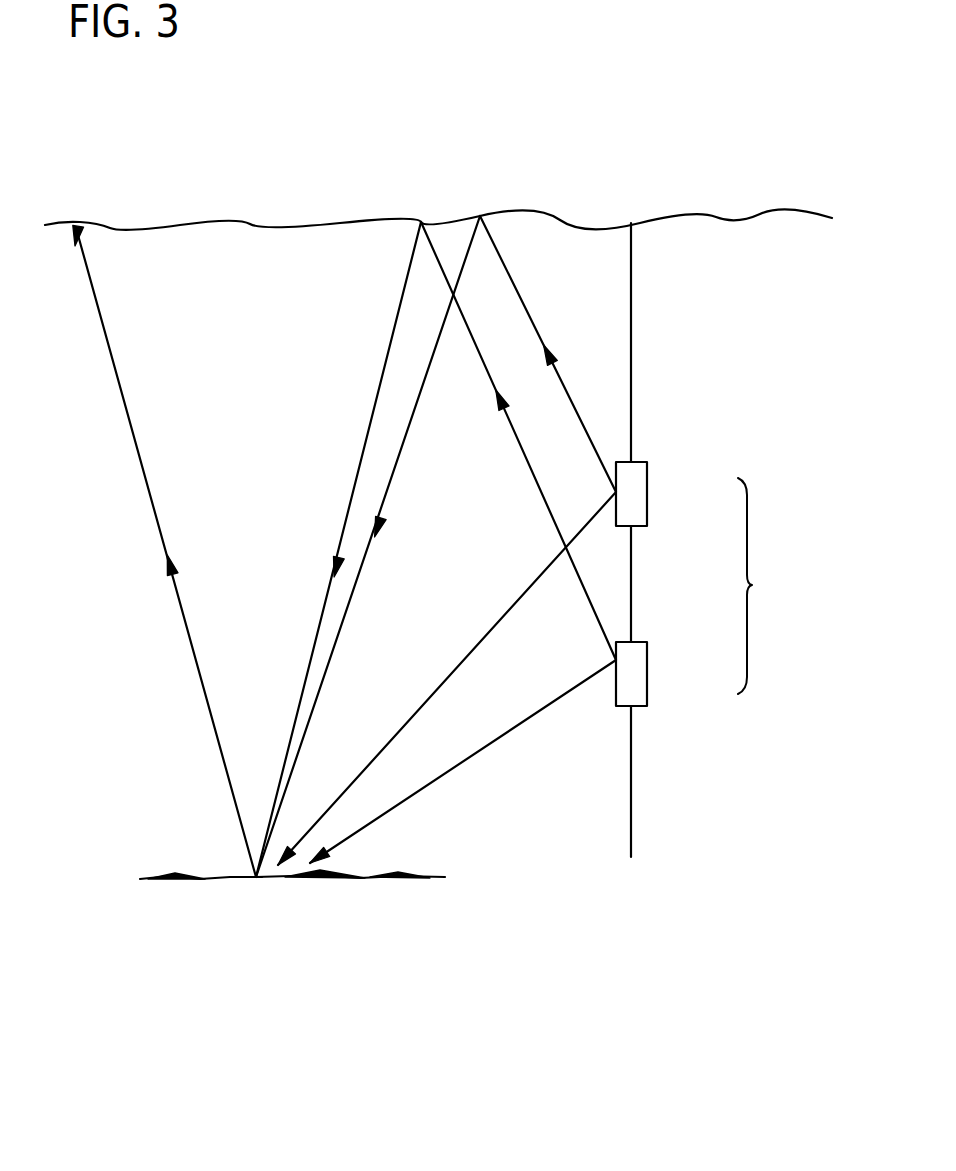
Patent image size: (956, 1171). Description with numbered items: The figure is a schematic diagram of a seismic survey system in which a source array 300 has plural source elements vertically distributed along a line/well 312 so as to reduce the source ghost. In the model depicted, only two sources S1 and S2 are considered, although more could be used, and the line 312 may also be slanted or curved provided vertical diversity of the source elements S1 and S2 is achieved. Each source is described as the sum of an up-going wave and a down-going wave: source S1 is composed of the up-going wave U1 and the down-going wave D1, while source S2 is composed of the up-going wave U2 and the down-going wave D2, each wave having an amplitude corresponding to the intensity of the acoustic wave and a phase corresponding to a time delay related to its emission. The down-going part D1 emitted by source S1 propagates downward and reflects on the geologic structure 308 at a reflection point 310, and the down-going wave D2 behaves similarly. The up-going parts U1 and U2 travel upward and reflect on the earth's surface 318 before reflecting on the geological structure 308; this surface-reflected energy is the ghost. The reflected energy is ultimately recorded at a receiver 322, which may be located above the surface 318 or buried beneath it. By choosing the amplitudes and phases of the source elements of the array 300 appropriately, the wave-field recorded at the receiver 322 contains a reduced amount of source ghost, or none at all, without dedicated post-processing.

The source array 300 is at (797, 598).
The geologic structure 308 is at (388, 877).
The reflection point 310 is at (243, 908).
The line/well 312 is at (632, 580).
The surface 318 is at (716, 217).
The receiver 322 is at (79, 228).
The first source S1 is at (647, 492).
The second source S2 is at (647, 662).
The up-going wave of source S1 U1 is at (522, 292).
The up-going wave of source S2 U2 is at (512, 435).
The down-going wave of source S1 D1 is at (465, 663).
The down-going wave of source S2 D2 is at (478, 758).